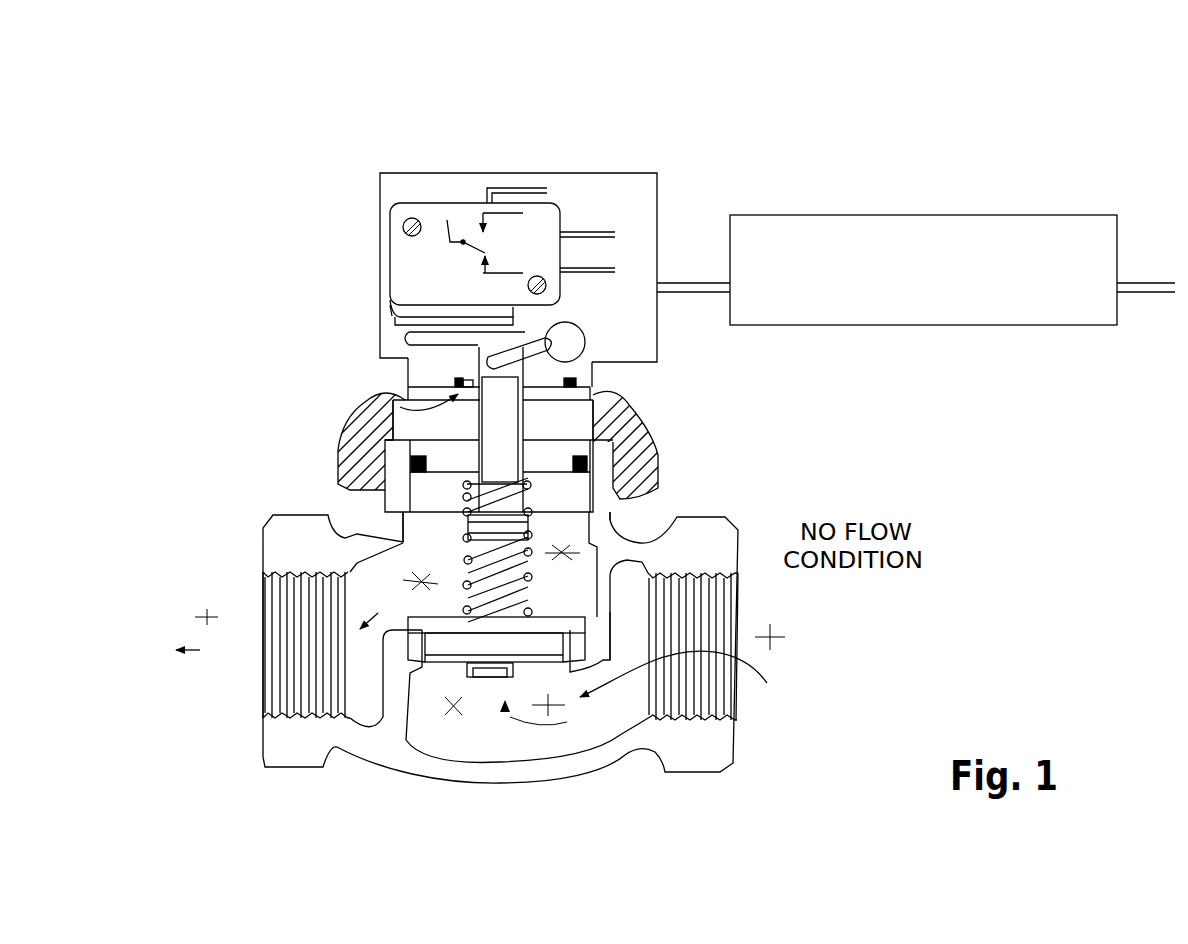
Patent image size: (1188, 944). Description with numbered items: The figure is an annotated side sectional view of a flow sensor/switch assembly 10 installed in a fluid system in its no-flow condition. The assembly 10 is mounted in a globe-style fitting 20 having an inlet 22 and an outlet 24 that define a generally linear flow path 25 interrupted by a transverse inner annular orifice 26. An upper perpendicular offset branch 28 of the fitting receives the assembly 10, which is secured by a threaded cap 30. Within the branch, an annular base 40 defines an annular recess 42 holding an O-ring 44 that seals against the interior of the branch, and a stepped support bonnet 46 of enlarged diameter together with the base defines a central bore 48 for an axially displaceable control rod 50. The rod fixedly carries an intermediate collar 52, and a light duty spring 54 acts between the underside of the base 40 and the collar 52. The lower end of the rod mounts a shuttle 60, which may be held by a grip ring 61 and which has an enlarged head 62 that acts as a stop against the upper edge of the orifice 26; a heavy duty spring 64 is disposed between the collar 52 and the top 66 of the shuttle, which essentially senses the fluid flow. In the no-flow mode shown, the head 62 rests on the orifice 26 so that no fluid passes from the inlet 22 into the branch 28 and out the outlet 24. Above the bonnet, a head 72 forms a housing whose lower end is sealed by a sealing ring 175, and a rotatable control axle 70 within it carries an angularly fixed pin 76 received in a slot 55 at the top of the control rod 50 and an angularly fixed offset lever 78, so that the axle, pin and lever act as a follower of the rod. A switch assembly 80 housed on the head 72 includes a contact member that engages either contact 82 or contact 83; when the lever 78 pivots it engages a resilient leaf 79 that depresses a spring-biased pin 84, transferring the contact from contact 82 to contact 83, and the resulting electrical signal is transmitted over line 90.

The flow sensor/switch assembly 10 is at (342, 168).
The globe-style fitting 20 is at (392, 737).
The inlet 22 is at (722, 716).
The outlet 24 is at (263, 696).
The flow path 25 is at (617, 688).
The inner annular orifice 26 is at (430, 683).
The upper perpendicular offset branch 28 is at (620, 512).
The threaded cap 30 is at (362, 452).
The annular base 40 is at (547, 462).
The annular recess 42 is at (522, 492).
The O-ring 44 is at (395, 451).
The support bonnet 46 is at (445, 425).
The central bore 48 is at (500, 415).
The control rod 50 is at (447, 428).
The intermediate collar 52 is at (470, 522).
The light duty spring 54 is at (578, 508).
The slot 55 is at (595, 363).
The shuttle 60 is at (408, 620).
The grip ring 61 is at (483, 684).
The head 62 is at (533, 610).
The heavy duty spring 64 is at (648, 562).
The top of the shuttle 66 is at (445, 615).
The control axle 70 is at (563, 341).
The head 72 is at (598, 177).
The pin 76 is at (505, 357).
The offset lever 78 is at (403, 345).
The resilient leaf 79 is at (395, 317).
The switch assembly 80 is at (438, 195).
The contact 82 is at (498, 272).
The contact 83 is at (508, 213).
The spring-biased pin 84 is at (395, 317).
The line 90 is at (1153, 283).
The sealing ring 175 is at (497, 460).